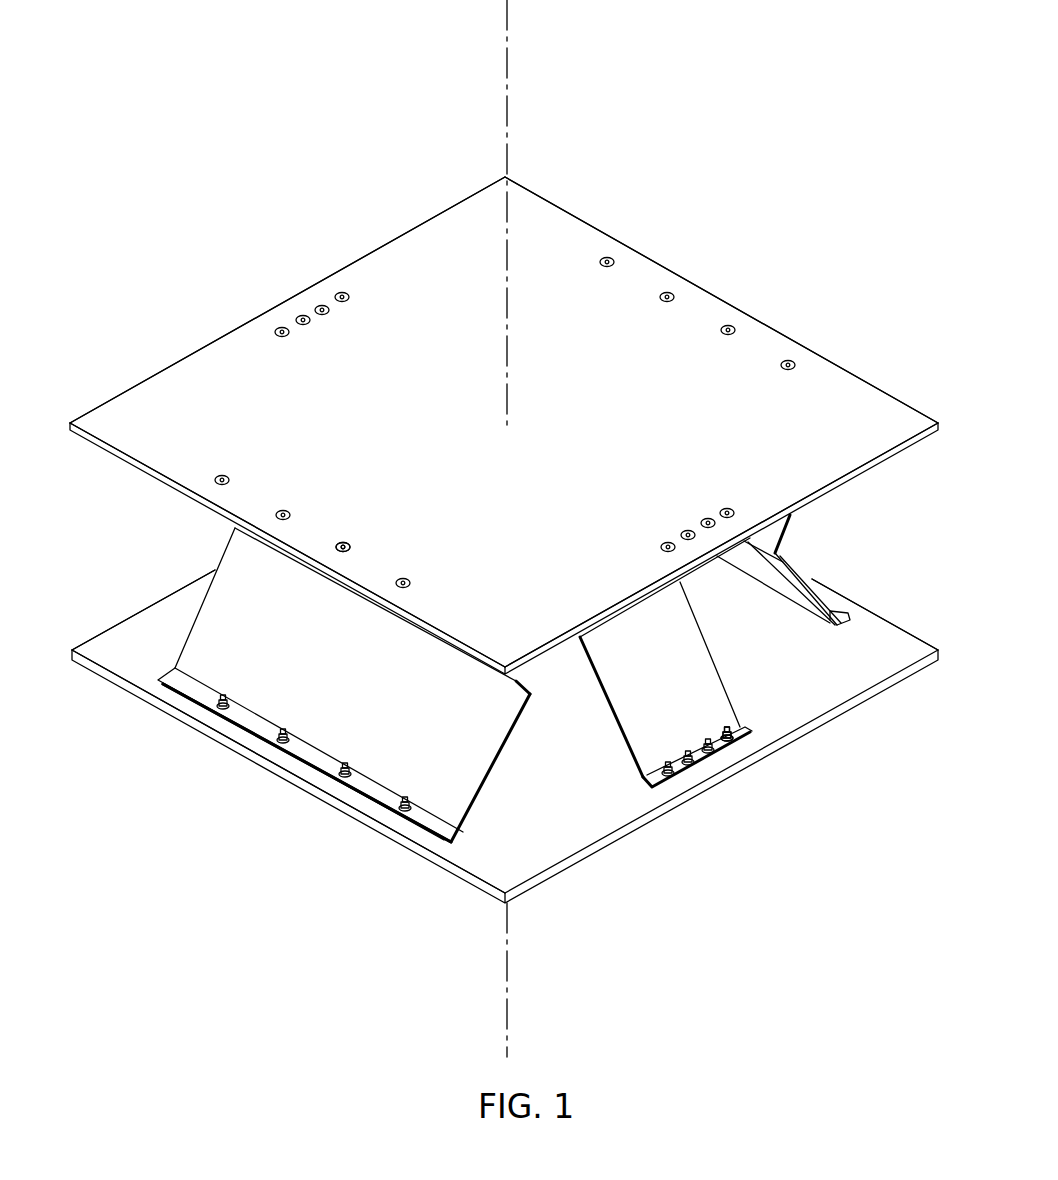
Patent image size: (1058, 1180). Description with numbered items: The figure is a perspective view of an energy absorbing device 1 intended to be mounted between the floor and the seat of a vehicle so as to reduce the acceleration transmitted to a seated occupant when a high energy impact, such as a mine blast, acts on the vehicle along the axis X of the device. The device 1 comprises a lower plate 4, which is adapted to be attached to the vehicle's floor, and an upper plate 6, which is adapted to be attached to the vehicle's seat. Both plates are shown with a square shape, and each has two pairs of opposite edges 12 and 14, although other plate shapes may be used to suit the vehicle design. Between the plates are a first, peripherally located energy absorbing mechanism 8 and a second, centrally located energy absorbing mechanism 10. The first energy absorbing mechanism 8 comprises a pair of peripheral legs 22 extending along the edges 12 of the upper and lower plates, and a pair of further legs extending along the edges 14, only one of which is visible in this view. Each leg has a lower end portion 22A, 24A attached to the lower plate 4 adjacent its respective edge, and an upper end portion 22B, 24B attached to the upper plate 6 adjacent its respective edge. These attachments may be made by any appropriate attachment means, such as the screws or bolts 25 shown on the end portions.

The device 1 is at (688, 100).
The lower plate 4 is at (575, 825).
The upper plate 6 is at (619, 409).
The first energy absorbing mechanism 8 is at (623, 798).
The second energy absorbing mechanism 10 is at (560, 672).
The edges 12 is at (103, 447).
The edges 14 is at (878, 460).
The peripheral legs 22 is at (778, 578).
The lower end portion 22A is at (437, 823).
The upper end portion 22B is at (513, 683).
The lower end portion 24A is at (833, 612).
The upper end portion 24B is at (630, 606).
The screws or bolts 25 is at (343, 546).
The axis X is at (507, 93).